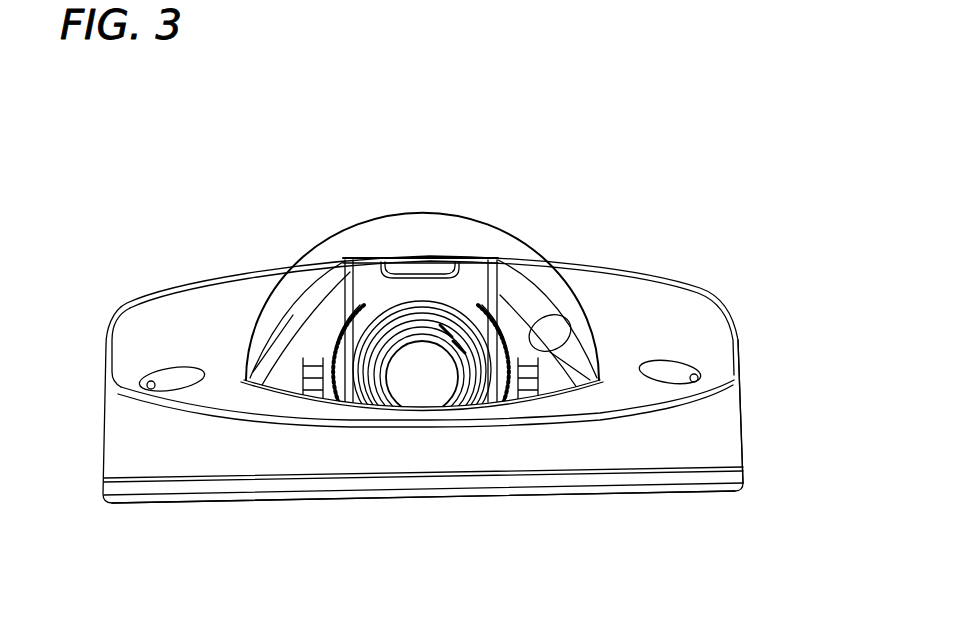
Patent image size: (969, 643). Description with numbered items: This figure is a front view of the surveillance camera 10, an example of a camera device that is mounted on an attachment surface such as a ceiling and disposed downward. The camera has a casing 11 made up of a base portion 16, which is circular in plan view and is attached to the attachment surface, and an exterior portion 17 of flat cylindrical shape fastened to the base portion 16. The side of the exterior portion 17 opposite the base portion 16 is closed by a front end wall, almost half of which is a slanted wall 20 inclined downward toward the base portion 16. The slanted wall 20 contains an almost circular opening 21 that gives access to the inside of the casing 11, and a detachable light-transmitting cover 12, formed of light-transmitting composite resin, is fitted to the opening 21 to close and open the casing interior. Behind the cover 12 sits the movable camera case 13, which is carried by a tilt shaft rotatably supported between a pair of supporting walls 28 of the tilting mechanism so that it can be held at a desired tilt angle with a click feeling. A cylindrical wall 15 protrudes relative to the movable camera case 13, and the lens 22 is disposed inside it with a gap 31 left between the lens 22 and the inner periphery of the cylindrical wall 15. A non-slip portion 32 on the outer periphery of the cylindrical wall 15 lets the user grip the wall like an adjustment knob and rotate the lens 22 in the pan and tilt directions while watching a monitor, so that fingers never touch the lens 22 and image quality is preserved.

The surveillance camera 10 is at (668, 197).
The casing 11 is at (703, 290).
The light-transmitting cover 12 is at (500, 232).
The movable camera case 13 is at (362, 262).
The cylindrical wall 15 is at (434, 295).
The base portion 16 is at (745, 497).
The exterior portion 17 is at (745, 412).
The slanted wall 20 is at (147, 317).
The opening 21 is at (545, 330).
The lens 22 is at (423, 390).
The supporting walls 28 is at (327, 293).
The gap 31 is at (367, 398).
The non-slip portion 32 is at (425, 298).